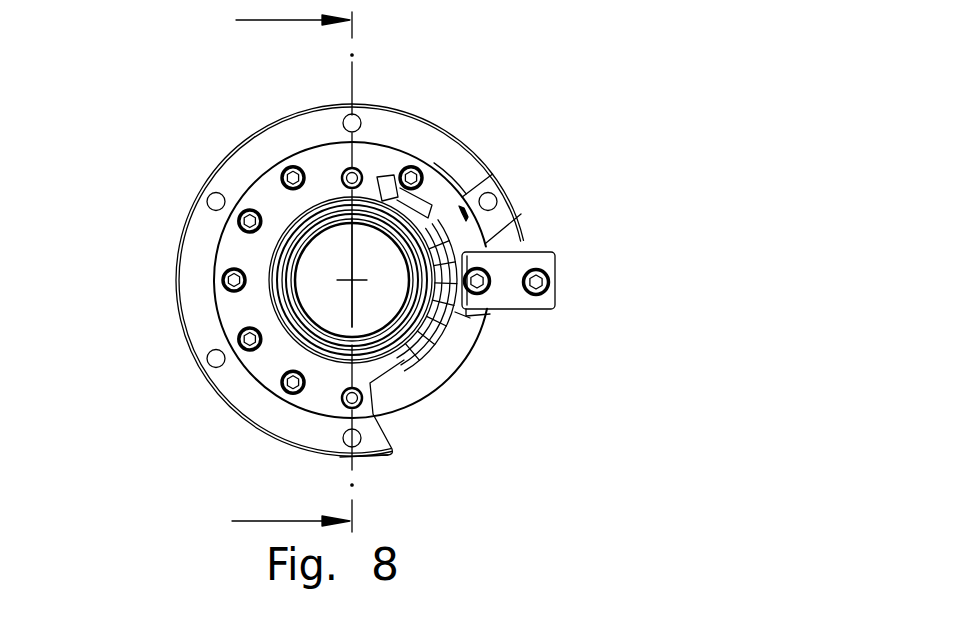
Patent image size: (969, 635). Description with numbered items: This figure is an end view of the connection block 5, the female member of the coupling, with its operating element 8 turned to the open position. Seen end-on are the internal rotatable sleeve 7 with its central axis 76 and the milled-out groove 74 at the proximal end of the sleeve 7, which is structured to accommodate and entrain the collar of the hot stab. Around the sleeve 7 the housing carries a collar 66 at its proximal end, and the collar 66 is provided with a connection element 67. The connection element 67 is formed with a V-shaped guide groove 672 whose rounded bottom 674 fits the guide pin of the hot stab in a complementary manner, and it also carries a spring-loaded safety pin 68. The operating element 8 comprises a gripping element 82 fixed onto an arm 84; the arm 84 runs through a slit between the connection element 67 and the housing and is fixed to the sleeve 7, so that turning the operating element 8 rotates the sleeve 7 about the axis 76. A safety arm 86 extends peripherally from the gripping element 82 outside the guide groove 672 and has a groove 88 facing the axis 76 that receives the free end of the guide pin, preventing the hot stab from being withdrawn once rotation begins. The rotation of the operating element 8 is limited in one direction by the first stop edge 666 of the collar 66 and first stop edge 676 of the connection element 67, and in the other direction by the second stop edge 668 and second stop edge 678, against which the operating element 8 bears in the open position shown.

The connection block 5 is at (322, 271).
The sleeve 7 is at (283, 236).
The operating element 8 is at (556, 268).
The collar 66 is at (345, 104).
The connection element 67 is at (412, 136).
The spring-loaded safety pin 68 is at (414, 140).
The milled-out groove 74 is at (400, 324).
The axis 76 is at (350, 282).
The gripping element 82 is at (549, 309).
The arm 84 is at (458, 313).
The safety arm 86 is at (492, 172).
The groove 88 is at (410, 133).
The first stop edge 666 is at (390, 435).
The second stop edge 668 is at (525, 245).
The V-shaped guide groove 672 is at (444, 304).
The bottom 674 is at (460, 311).
The first stop edge 676 is at (372, 408).
The second stop edge 678 is at (514, 251).